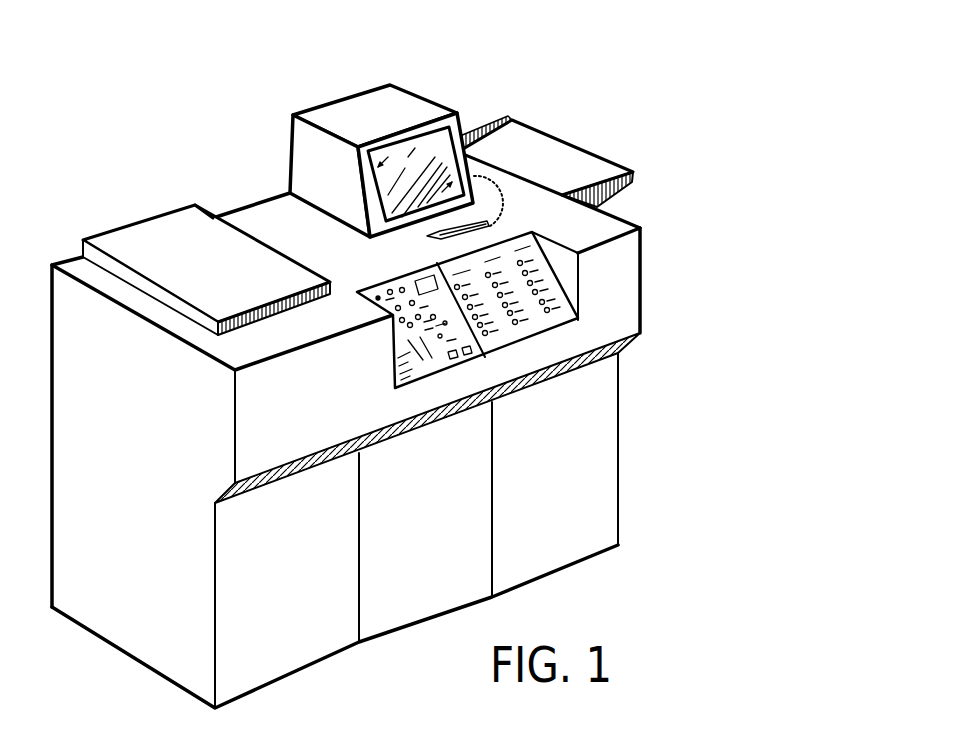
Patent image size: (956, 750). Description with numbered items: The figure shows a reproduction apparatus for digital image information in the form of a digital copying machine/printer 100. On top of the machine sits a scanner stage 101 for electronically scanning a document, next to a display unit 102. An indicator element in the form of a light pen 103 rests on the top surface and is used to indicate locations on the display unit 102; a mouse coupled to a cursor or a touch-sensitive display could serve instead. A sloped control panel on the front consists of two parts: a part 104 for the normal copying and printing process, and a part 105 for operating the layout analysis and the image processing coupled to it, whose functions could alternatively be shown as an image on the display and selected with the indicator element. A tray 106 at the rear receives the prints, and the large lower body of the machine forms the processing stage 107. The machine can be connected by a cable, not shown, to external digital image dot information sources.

The digital copying machine/printer 100 is at (369, 355).
The scanner stage 101 is at (127, 223).
The display unit 102 is at (358, 93).
The light pen 103 is at (432, 238).
The control panel part 104 is at (447, 370).
The control panel part 105 is at (549, 333).
The tray 106 is at (570, 142).
The processing stage 107 is at (622, 448).